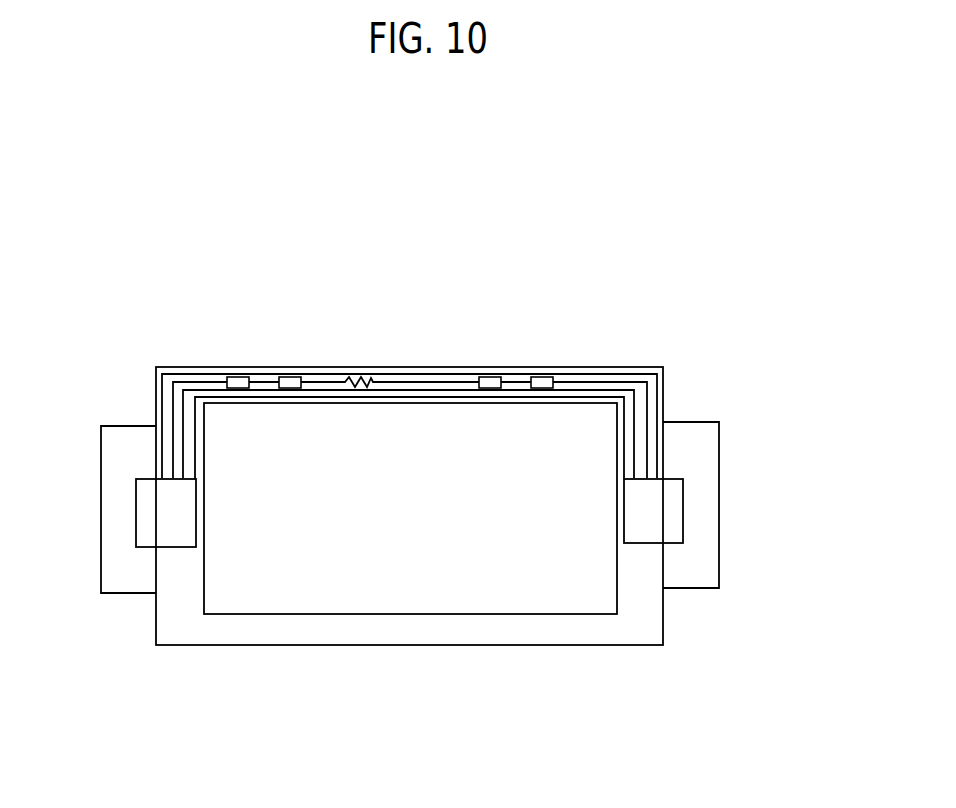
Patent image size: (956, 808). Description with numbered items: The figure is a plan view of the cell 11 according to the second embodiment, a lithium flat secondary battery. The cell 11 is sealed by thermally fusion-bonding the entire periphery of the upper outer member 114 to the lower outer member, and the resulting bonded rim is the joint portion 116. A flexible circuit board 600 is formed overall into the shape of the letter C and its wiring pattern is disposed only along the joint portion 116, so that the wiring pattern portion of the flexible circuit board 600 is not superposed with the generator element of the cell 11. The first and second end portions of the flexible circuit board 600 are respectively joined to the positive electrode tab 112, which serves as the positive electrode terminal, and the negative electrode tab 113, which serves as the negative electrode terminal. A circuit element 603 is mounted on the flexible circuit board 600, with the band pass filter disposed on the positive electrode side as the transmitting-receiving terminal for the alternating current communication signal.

The cell 11 is at (710, 339).
The positive electrode tab 112 is at (717, 557).
The negative electrode tab 113 is at (117, 580).
The upper outer member 114 is at (583, 587).
The joint portion 116 is at (188, 367).
The flexible circuit board 600 is at (606, 362).
The circuit element 603 is at (290, 378).